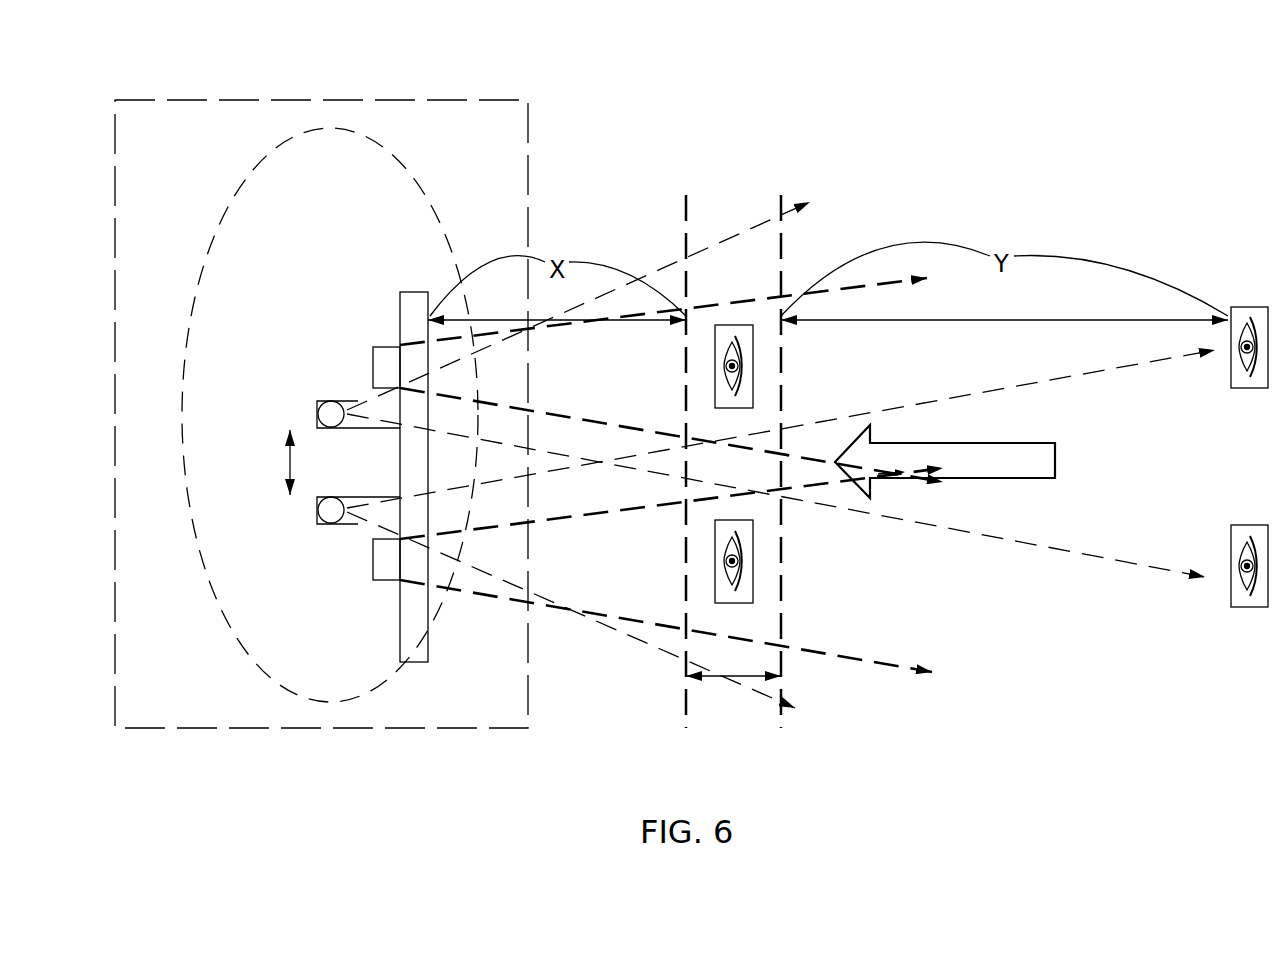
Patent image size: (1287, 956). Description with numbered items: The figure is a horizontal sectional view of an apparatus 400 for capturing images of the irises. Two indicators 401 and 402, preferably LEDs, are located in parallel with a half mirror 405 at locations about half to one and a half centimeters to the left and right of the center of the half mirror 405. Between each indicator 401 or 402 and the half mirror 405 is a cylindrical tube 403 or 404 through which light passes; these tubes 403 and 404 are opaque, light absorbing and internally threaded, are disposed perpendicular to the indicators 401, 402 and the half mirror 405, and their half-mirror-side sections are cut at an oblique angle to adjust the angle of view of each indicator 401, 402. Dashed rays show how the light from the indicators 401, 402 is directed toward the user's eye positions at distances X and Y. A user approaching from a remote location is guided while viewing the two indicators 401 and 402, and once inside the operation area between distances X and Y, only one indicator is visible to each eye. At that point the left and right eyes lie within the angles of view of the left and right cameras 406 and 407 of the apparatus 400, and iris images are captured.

The apparatus for capturing images of the irises 400 is at (528, 127).
The indicator 401 is at (330, 401).
The indicator 402 is at (330, 497).
The cylindrical tube 403 is at (316, 422).
The cylindrical tube 404 is at (317, 498).
The half mirror 405 is at (415, 291).
The left camera 406 is at (373, 351).
The right camera 407 is at (382, 566).